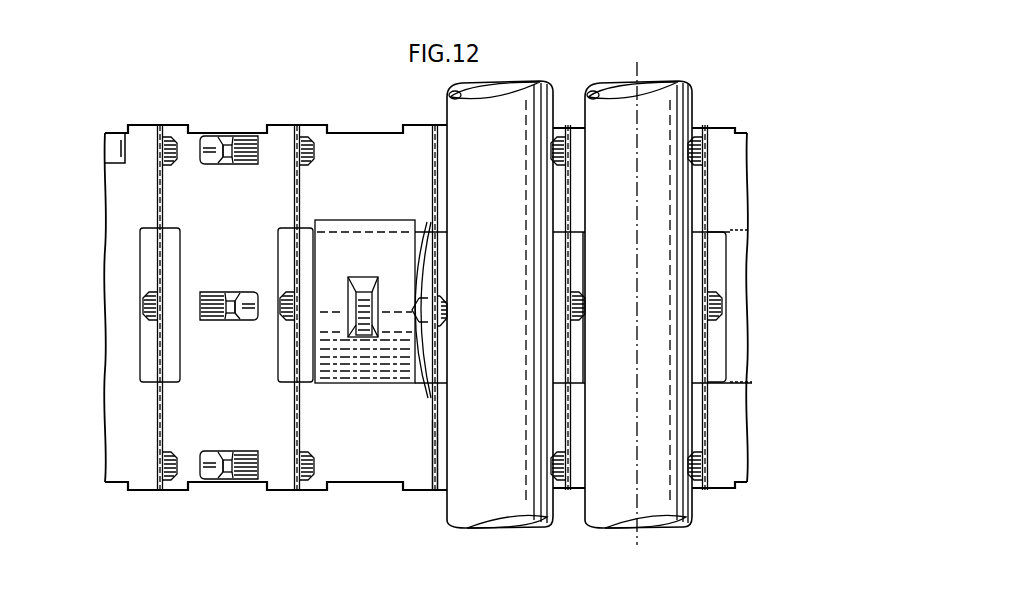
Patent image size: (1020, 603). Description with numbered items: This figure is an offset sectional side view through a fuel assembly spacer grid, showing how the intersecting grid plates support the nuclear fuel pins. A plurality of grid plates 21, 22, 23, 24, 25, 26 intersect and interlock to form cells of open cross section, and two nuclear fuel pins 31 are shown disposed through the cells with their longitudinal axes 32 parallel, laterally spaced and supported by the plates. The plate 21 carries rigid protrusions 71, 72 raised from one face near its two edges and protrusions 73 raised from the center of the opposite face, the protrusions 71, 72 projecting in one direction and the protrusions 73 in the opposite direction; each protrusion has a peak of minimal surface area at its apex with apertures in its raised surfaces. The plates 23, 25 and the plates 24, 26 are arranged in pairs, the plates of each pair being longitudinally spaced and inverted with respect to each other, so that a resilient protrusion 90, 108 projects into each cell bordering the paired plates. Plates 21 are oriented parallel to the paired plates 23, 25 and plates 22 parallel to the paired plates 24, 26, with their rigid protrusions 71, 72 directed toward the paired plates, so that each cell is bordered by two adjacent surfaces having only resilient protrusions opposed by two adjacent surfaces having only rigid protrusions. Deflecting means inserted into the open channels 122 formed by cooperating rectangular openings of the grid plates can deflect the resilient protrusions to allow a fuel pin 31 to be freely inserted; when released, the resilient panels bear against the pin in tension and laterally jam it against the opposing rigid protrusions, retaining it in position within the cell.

The grid plate 21 is at (196, 130).
The grid plate 22 is at (292, 130).
The grid plate 23 is at (355, 130).
The grid plate 24 is at (430, 148).
The grid plate 25 is at (371, 492).
The grid plate 26 is at (430, 490).
The nuclear fuel pin 31 is at (510, 182).
The longitudinal axis 32 is at (637, 90).
The protrusion 71 is at (229, 138).
The protrusion 72 is at (248, 479).
The protrusion 73 is at (284, 300).
The resilient protrusion 90 is at (440, 292).
The resilient protrusion 108 is at (416, 292).
The open channel 122 is at (714, 282).